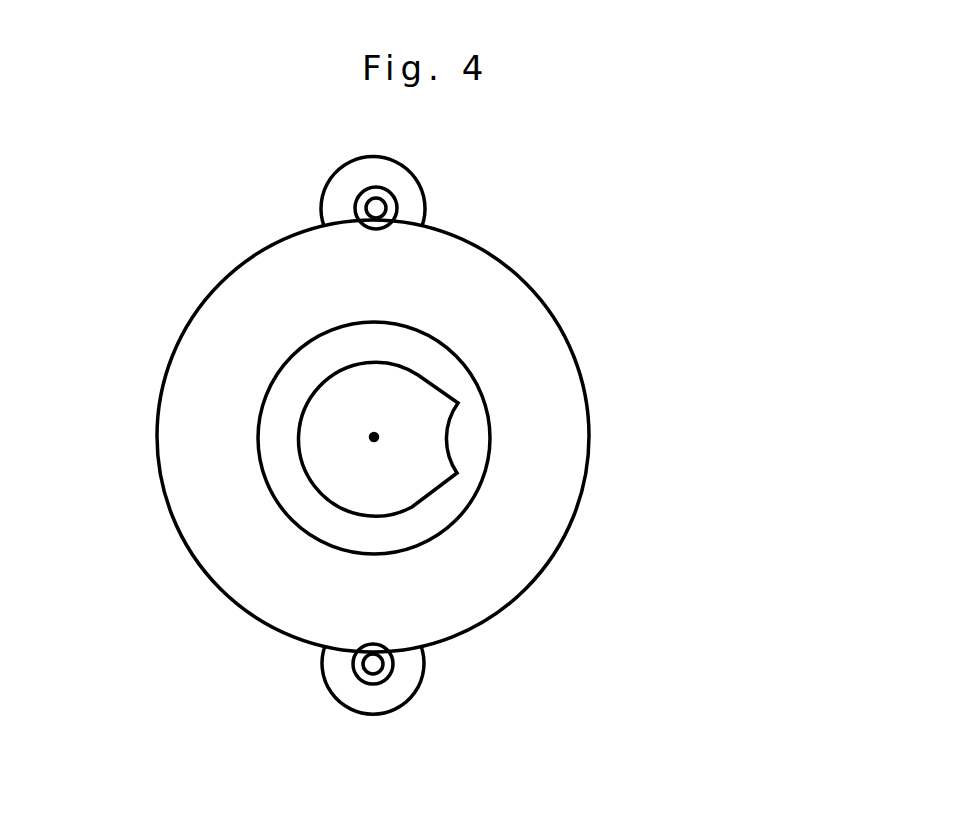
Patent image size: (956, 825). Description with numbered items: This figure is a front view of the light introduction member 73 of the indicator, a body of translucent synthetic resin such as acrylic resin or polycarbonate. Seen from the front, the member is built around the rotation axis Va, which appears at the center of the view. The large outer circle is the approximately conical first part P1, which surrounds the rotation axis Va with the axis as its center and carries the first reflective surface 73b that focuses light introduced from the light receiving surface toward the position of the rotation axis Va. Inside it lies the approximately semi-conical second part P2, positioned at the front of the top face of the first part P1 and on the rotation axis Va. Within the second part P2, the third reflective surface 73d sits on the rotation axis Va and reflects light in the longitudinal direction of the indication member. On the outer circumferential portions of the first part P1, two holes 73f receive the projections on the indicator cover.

The light introduction member 73 is at (371, 428).
The first reflective surface 73b is at (523, 490).
The holes 73f is at (380, 206).
The third reflective surface 73d is at (361, 398).
The first part P1 is at (183, 280).
The second part P2 is at (280, 477).
The rotation axis Va is at (374, 437).